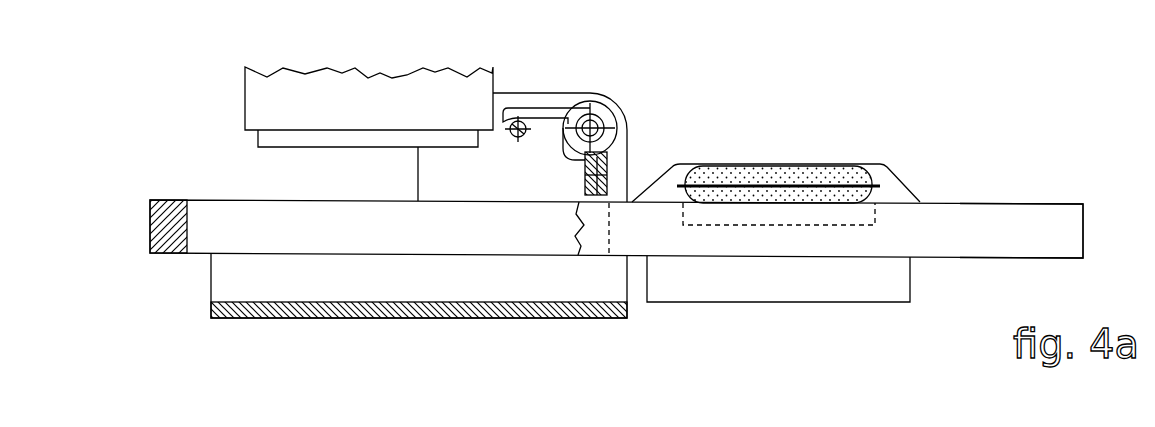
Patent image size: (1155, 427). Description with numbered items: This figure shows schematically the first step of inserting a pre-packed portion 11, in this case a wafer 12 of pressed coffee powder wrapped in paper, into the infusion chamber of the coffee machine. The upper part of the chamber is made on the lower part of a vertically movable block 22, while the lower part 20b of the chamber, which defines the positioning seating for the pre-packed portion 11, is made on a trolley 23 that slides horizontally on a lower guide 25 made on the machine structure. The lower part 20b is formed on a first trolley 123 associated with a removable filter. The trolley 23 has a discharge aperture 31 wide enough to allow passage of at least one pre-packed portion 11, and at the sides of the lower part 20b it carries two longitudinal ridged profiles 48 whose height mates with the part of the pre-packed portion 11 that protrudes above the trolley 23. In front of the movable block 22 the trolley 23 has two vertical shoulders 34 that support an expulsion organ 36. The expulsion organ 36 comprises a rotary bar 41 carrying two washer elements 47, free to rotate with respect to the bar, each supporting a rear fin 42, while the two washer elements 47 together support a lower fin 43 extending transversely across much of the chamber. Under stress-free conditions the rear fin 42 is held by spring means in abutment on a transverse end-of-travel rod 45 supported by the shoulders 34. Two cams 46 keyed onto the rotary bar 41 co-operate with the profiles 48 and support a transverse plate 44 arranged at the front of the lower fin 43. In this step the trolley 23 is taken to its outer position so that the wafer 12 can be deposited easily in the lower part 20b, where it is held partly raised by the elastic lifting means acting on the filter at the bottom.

The pre-packed portion 11 is at (828, 164).
The wafer 12 is at (775, 172).
The lower part of the infusion chamber 20b is at (876, 224).
The vertically movable block 22 is at (256, 100).
The trolley 23 is at (970, 258).
The lower guide 25 is at (268, 308).
The discharge aperture 31 is at (240, 222).
The vertical shoulders 34 is at (432, 168).
The expulsion organ 36 is at (539, 107).
The rotary bar 41 is at (598, 127).
The rear fin 42 is at (558, 113).
The lower fin 43 is at (588, 182).
The transverse plate 44 is at (603, 173).
The transverse end-of-travel rod 45 is at (516, 120).
The cams 46 is at (607, 143).
The washer elements 47 is at (573, 102).
The longitudinal ridged profiles 48 is at (888, 177).
The first trolley 123 is at (1003, 210).